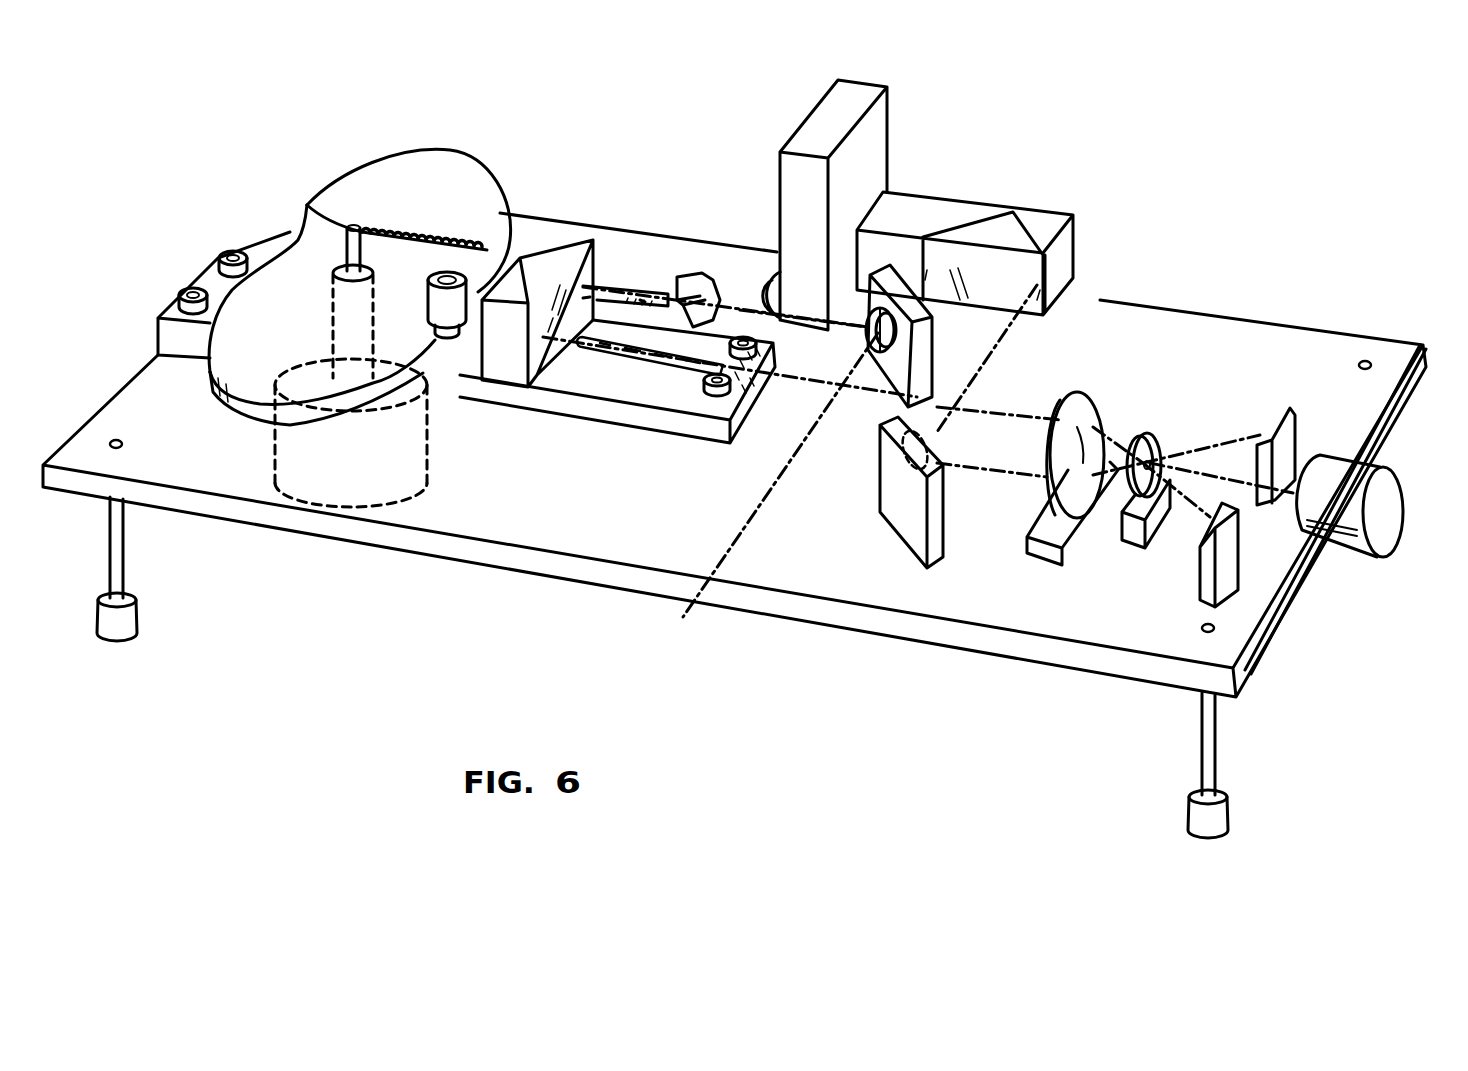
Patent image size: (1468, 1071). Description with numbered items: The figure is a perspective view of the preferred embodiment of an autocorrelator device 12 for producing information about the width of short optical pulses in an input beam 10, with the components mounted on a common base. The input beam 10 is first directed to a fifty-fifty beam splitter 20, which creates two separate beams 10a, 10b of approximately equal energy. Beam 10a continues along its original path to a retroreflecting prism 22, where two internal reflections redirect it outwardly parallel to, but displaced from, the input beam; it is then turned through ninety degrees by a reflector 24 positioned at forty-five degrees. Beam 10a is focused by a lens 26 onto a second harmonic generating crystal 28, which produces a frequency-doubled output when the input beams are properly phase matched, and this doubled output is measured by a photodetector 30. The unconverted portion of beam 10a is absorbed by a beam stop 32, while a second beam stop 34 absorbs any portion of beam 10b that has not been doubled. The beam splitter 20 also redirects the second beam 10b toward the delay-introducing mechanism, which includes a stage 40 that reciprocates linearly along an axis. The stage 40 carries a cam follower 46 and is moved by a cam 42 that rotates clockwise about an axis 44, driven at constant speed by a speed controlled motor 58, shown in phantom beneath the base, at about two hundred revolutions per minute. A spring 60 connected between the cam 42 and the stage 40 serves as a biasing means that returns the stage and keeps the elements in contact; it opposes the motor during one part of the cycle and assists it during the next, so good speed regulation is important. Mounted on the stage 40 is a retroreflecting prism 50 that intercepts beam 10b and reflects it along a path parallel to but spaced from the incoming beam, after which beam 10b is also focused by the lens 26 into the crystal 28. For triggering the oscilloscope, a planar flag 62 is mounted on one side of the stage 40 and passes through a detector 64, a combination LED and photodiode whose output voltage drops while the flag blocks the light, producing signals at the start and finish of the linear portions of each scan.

The input beam 10 is at (735, 531).
The first beam 10a is at (993, 353).
The second beam 10b is at (775, 440).
The device 12 is at (1131, 172).
The beam splitter 20 is at (912, 333).
The retroreflecting prism 22 is at (998, 225).
The reflector 24 is at (882, 480).
The lens 26 is at (1087, 397).
The second harmonic generating crystal 28 is at (1145, 433).
The photodetector 30 is at (1383, 455).
The beam stop 32 is at (1268, 412).
The second beam stop 34 is at (1230, 557).
The stage 40 is at (467, 333).
The cam 42 is at (364, 177).
The axis 44 is at (307, 205).
The cam follower 46 is at (433, 297).
The retroreflecting prism 50 is at (565, 250).
The speed controlled motor 58 is at (423, 495).
The spring 60 is at (418, 230).
The planar flag 62 is at (630, 287).
The detector 64 is at (695, 280).